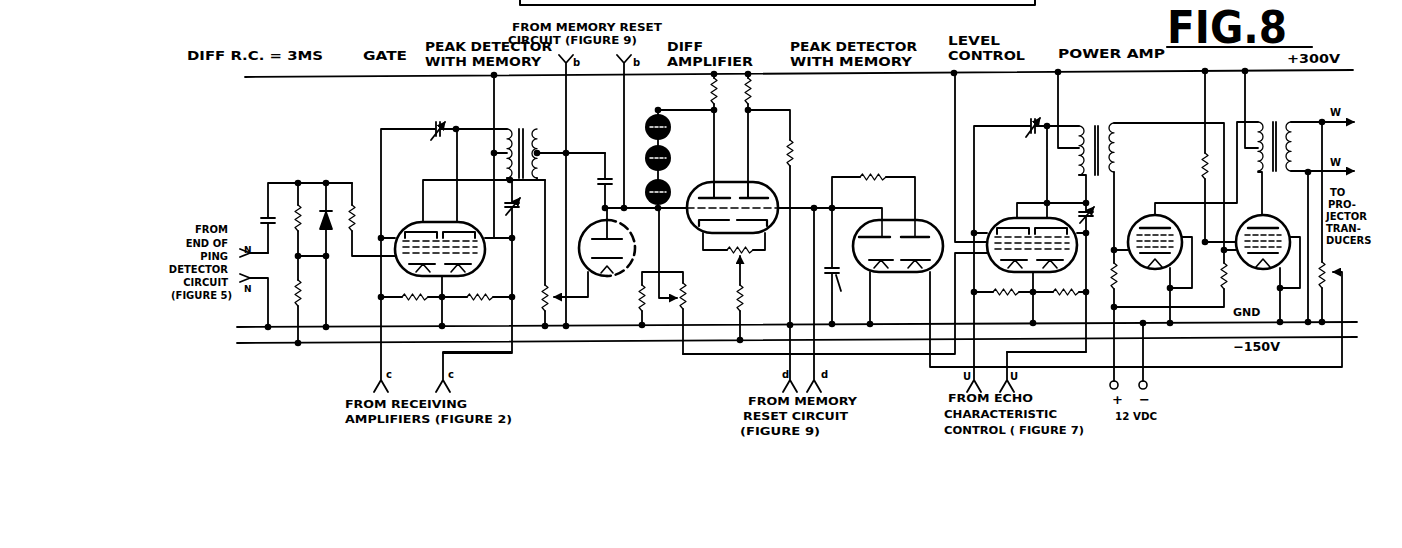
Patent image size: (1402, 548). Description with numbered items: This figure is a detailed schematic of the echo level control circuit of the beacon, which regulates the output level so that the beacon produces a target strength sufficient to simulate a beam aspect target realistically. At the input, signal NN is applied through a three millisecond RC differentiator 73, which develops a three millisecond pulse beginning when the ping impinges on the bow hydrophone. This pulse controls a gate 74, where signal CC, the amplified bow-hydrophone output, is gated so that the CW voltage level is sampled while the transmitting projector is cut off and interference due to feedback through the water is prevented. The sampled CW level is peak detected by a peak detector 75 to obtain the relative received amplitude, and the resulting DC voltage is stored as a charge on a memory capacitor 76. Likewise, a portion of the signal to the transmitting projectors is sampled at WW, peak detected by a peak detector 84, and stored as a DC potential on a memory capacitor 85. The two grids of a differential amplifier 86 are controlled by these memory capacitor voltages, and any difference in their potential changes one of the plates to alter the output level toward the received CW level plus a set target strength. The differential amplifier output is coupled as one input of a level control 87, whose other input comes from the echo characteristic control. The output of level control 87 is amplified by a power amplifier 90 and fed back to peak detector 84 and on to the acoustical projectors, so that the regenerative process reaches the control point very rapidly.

The RC differentiator 73 is at (304, 131).
The gate 74 is at (402, 106).
The peak detector 75 is at (580, 128).
The memory capacitor 76 is at (609, 175).
The peak detector 84 is at (882, 121).
The memory capacitor 85 is at (840, 266).
The differential amplifier 86 is at (800, 116).
The level control 87 is at (990, 115).
The power amplifier 90 is at (1289, 108).